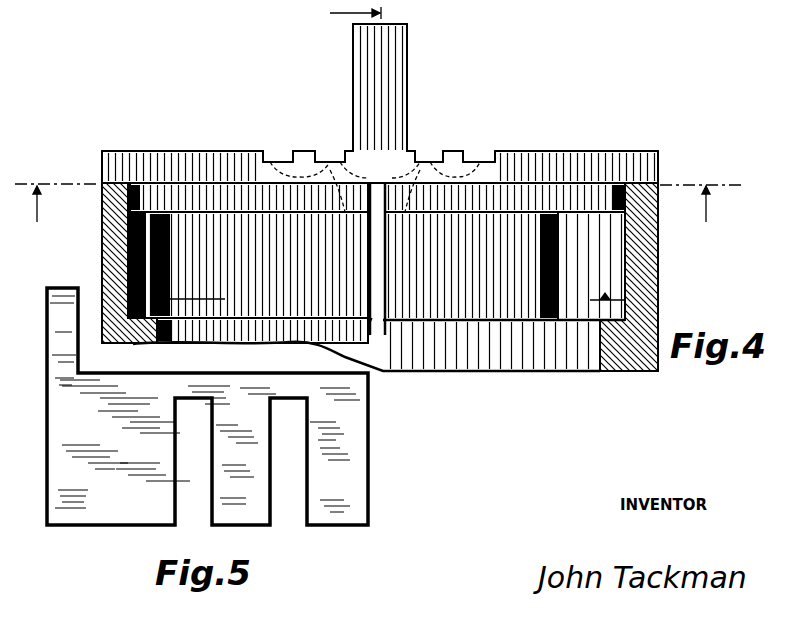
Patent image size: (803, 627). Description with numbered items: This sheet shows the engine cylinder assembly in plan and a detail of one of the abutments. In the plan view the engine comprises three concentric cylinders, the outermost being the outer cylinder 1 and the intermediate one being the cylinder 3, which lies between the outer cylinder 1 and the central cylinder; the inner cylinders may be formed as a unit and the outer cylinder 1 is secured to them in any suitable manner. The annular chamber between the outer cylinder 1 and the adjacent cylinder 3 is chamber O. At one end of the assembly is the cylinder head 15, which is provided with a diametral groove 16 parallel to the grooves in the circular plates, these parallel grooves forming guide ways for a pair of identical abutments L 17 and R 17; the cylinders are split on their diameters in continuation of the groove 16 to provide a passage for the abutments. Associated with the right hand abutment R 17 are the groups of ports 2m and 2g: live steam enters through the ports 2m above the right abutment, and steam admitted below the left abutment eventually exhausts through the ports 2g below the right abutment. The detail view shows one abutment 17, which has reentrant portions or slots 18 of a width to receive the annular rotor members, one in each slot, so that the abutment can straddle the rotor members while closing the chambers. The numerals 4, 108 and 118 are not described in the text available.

In FIG. 4, the outer cylinder 1 is at (102, 255).
In FIG. 4, the cylinder head 15 is at (623, 155).
In FIG. 4, the group of ports 2g is at (340, 222).
In FIG. 4, the group of ports 2m is at (412, 222).
In FIG. 4, the bottom ring 118 is at (207, 343).
In FIG. 4, the bottom plate 108 is at (463, 328).
In FIG. 4, the diametral groove 16 is at (378, 225).
In FIG. 4, the cylinder 3 is at (380, 242).
In FIG. 4, the view direction 4 is at (346, 14).
In FIG. 5, the abutment 17 is at (104, 482).
In FIG. 5, the reentrant portions or slots 18 is at (241, 461).